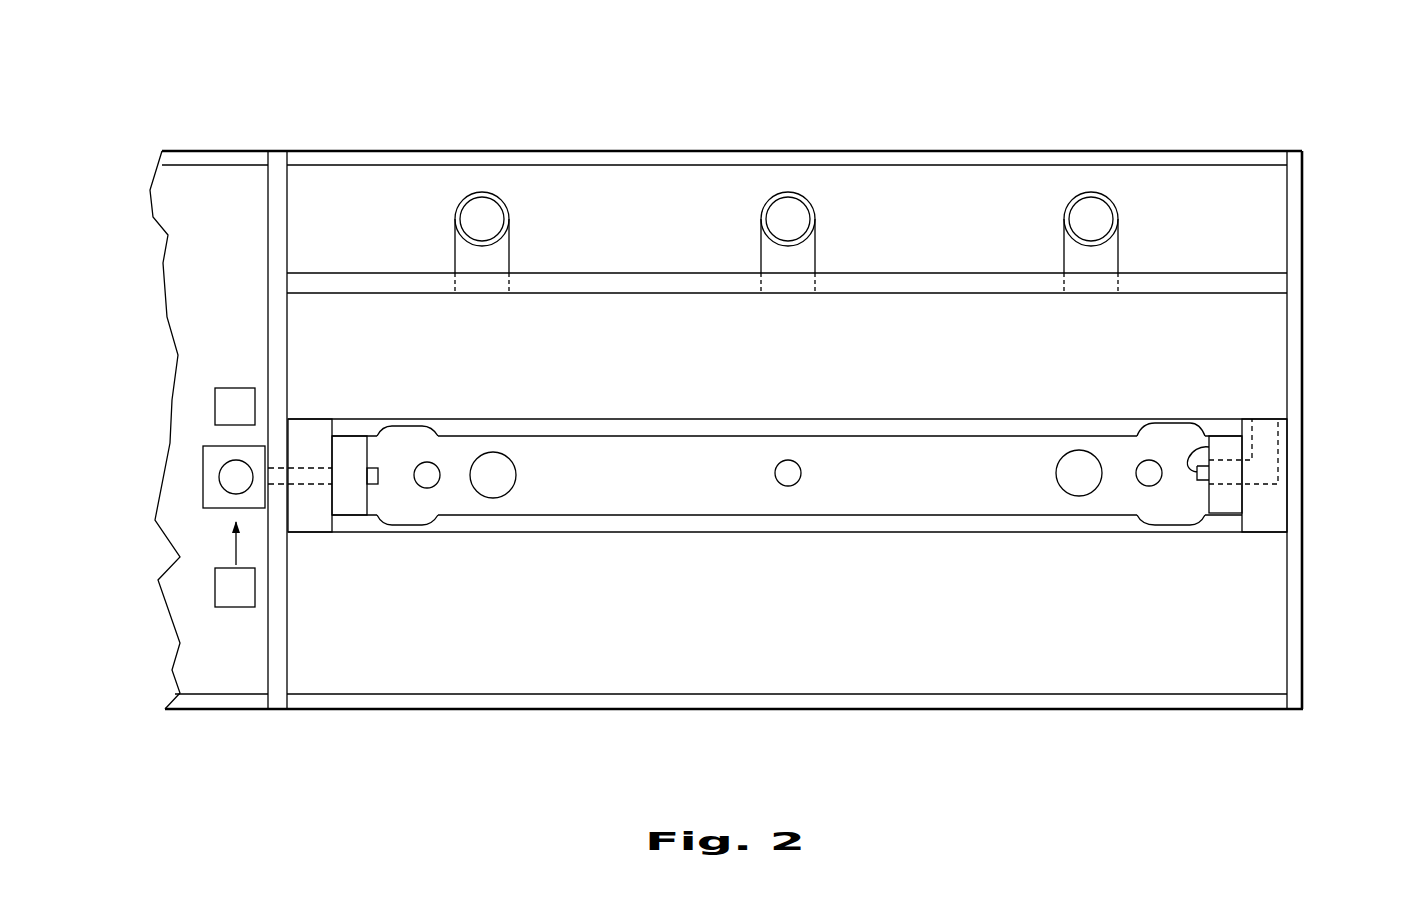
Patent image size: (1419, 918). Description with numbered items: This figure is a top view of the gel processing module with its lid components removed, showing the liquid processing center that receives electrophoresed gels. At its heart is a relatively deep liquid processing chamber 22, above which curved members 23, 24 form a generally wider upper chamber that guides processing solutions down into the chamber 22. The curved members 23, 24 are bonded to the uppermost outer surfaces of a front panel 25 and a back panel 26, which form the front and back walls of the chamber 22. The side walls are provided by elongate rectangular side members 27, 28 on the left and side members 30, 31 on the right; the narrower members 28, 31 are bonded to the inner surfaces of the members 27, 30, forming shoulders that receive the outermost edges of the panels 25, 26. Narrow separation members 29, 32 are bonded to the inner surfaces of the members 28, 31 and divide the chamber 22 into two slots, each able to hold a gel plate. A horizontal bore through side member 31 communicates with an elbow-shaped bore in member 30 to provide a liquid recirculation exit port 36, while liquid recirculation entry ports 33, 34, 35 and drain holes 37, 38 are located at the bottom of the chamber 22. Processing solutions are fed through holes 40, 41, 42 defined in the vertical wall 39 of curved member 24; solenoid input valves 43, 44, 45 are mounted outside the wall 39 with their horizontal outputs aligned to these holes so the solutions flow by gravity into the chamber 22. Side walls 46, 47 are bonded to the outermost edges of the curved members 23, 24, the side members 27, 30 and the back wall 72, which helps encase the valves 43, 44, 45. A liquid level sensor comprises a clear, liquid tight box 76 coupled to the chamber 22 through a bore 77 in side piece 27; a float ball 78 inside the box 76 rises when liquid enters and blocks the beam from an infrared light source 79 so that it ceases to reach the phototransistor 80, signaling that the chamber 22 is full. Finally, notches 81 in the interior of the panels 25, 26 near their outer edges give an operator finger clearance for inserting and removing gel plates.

The liquid processing chamber 22 is at (924, 474).
The curved member 23 is at (663, 621).
The curved member 24 is at (655, 362).
The front panel 25 is at (778, 531).
The back panel 26 is at (842, 425).
The side member 27 is at (312, 520).
The side member 28 is at (353, 500).
The separation member 29 is at (383, 478).
The side member 30 is at (1263, 517).
The side member 31 is at (1223, 504).
The separation member 32 is at (1187, 448).
The liquid recirculation entry port 33 is at (439, 464).
The liquid recirculation entry port 34 is at (788, 462).
The liquid recirculation entry port 35 is at (1146, 469).
The liquid recirculation exit port 36 is at (1267, 457).
The drain hole 37 is at (494, 476).
The drain hole 38 is at (1084, 476).
The vertical wall 39 is at (325, 278).
The hole 40 is at (480, 300).
The hole 41 is at (786, 300).
The hole 42 is at (1088, 300).
The solenoid input valve 43 is at (510, 238).
The solenoid input valve 44 is at (815, 237).
The solenoid input valve 45 is at (1118, 237).
The side wall 46 is at (266, 228).
The side wall 47 is at (1292, 205).
The back wall 72 is at (1143, 150).
The liquid tight box 76 is at (203, 458).
The bore 77 is at (298, 467).
The float ball 78 is at (232, 478).
The infrared light source 79 is at (216, 593).
The phototransistor 80 is at (213, 390).
The notch 81 is at (397, 426).